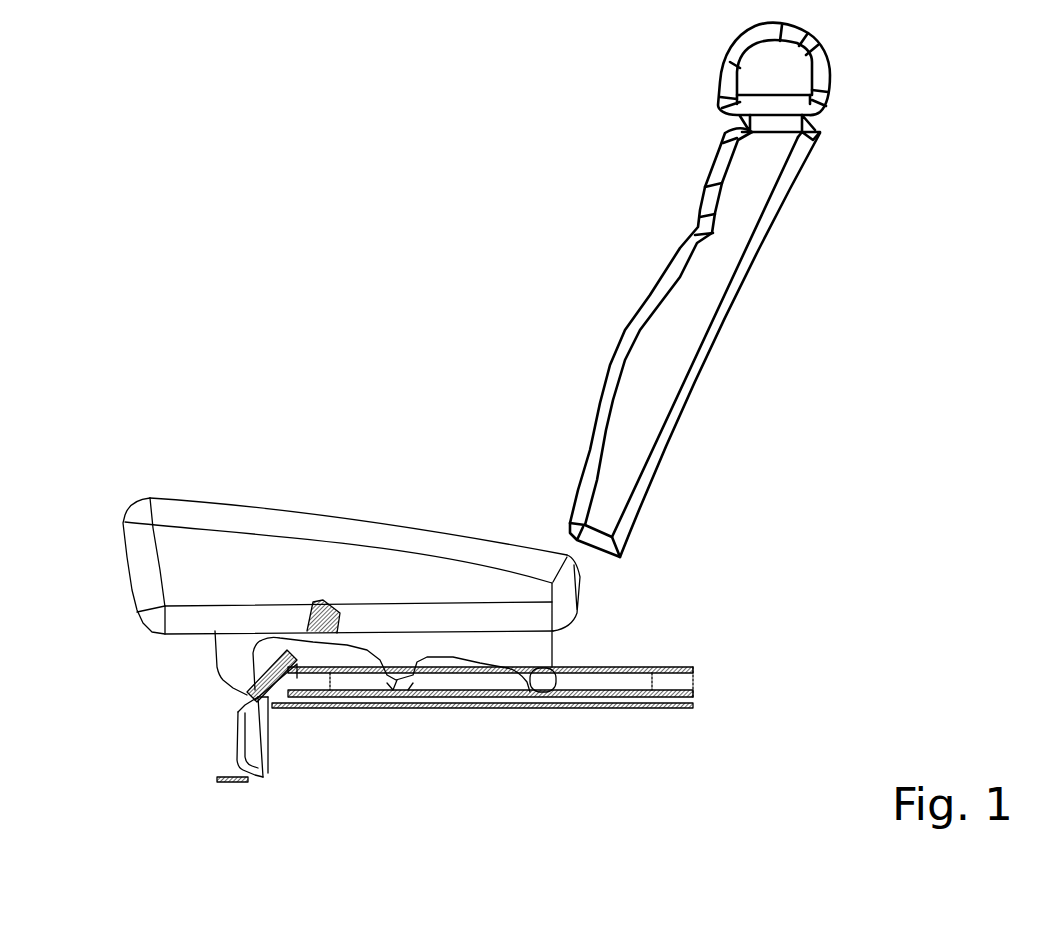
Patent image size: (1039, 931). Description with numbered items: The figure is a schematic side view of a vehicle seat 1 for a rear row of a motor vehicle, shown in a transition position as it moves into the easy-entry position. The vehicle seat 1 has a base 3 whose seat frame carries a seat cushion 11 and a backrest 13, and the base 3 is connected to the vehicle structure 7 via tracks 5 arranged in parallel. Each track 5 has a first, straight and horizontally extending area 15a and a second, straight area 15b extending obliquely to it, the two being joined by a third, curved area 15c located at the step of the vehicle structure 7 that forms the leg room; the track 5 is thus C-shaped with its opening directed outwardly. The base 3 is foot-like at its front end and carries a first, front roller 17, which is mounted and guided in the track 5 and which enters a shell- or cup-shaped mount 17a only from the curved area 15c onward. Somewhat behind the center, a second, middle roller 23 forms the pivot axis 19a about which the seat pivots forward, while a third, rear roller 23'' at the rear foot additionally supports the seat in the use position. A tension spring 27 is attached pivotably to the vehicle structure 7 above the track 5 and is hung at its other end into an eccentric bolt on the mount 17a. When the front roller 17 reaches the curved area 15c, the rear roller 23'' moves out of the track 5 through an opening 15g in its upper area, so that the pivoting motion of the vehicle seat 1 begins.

The vehicle seat 1 is at (394, 451).
The base 3 is at (223, 645).
The track 5 is at (613, 672).
The vehicle structure 7 is at (247, 782).
The seat cushion 11 is at (248, 532).
The backrest 13 is at (661, 375).
The first, straight and horizontally extending area 15a is at (578, 681).
The second, straight area 15b is at (248, 742).
The third, curved area 15c is at (248, 695).
The opening 15g is at (510, 668).
The first, front roller 17 is at (253, 684).
The mount 17a is at (260, 712).
The pivot axis 19a is at (398, 678).
The second, middle roller 23 is at (388, 756).
The third, rear roller 23'' is at (516, 713).
The tension spring 27 is at (282, 672).